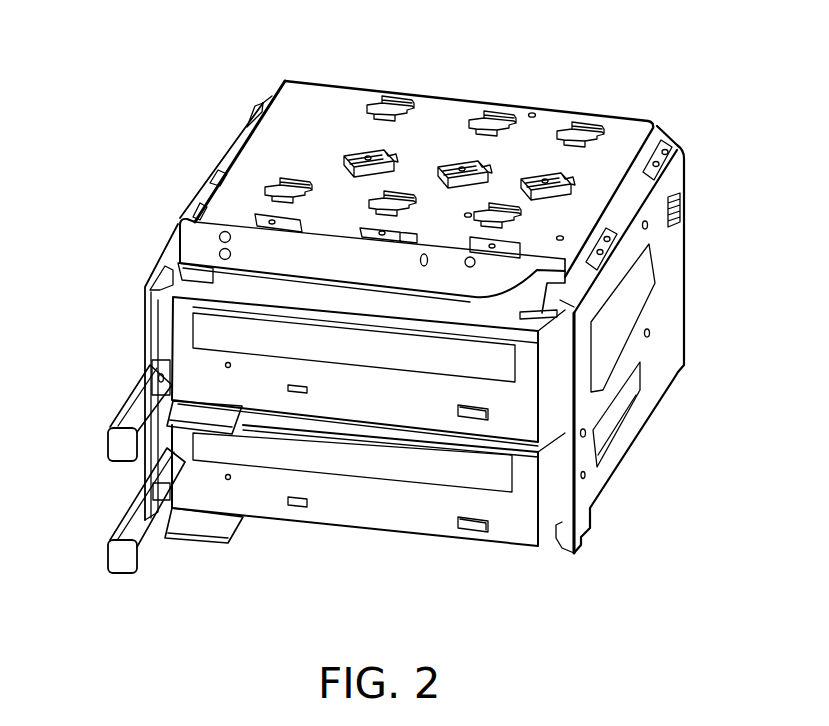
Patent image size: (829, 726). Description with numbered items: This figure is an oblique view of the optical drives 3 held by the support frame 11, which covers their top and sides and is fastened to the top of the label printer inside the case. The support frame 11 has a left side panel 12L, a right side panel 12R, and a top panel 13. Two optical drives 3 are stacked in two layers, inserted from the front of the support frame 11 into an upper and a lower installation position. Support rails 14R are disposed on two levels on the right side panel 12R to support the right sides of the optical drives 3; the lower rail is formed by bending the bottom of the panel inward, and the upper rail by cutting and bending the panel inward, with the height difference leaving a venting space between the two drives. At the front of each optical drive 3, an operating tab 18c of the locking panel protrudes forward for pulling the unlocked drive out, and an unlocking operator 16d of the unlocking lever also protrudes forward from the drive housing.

The support frame 11 is at (385, 328).
The top panel 13 is at (343, 82).
The left side panel 12L is at (228, 153).
The right side panel 12R is at (662, 339).
The support rail 14R is at (607, 348).
The unlocking operator 16d is at (108, 443).
The operating tab 18c is at (230, 417).
The optical drive 3 is at (405, 414).